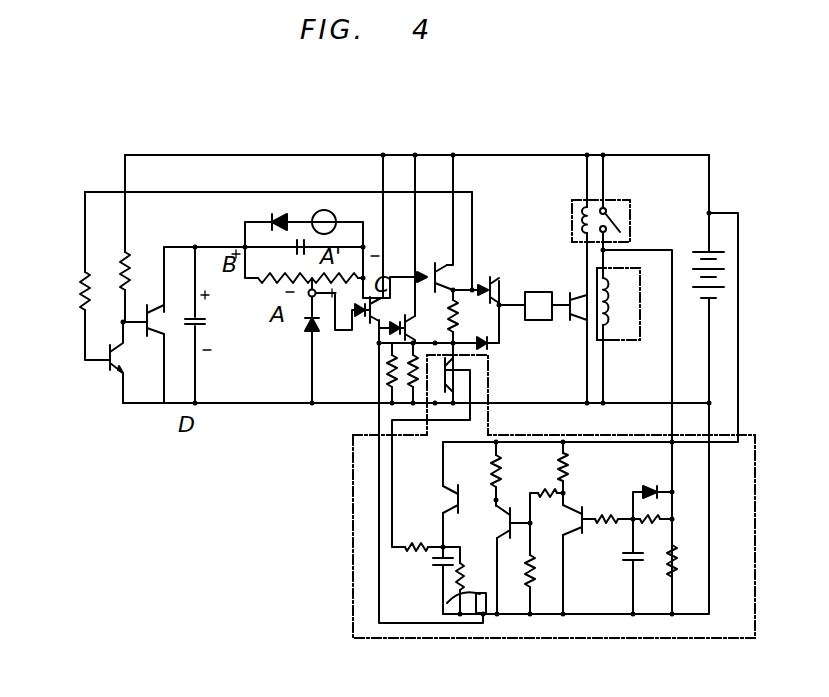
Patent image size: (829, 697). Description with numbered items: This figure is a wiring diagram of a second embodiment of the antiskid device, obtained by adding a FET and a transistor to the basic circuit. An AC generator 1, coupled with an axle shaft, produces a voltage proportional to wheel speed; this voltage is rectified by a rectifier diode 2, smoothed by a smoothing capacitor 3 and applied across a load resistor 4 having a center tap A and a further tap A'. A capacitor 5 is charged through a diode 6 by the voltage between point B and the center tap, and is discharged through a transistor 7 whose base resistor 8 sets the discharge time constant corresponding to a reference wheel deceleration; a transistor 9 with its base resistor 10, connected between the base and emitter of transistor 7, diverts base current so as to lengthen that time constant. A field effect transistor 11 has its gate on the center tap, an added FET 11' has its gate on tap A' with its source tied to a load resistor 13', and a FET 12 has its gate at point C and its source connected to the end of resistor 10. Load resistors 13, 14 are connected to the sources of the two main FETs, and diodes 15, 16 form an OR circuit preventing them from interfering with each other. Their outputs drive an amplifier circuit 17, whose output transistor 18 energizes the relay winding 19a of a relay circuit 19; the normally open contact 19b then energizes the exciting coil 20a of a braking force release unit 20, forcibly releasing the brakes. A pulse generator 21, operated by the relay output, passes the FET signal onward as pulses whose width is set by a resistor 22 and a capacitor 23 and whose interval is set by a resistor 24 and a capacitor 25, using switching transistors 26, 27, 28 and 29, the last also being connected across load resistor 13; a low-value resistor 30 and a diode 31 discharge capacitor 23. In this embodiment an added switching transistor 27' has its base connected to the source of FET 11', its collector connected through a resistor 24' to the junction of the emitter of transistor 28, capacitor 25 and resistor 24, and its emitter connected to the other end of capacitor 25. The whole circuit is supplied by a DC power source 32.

The AC generator 1 is at (335, 214).
The rectifier diode 2 is at (272, 214).
The smoothing capacitor 3 is at (288, 266).
The load resistor 4 is at (266, 284).
The capacitor 5 is at (186, 326).
The diode 6 is at (305, 328).
The transistor 7 is at (148, 340).
The base resistor 8 is at (110, 265).
The transistor 9 is at (110, 375).
The base resistor 10 is at (78, 288).
The field effect transistor 11 is at (413, 314).
The FET 11' is at (357, 327).
The FET 12 is at (430, 258).
The load resistor 13 is at (367, 368).
The load resistor 13' is at (375, 376).
The load resistor 14 is at (460, 310).
The diode 15 is at (490, 282).
The diode 16 is at (488, 346).
The amplifier circuit 17 is at (538, 290).
The transistor 18 is at (575, 322).
The relay circuit 19 is at (580, 198).
The relay winding 19a is at (578, 222).
The normally open contact 19b is at (620, 215).
The braking force release unit 20 is at (640, 332).
The exciting coil 20a is at (615, 318).
The pulse generator 21 is at (352, 520).
The resistor 22 is at (650, 523).
The capacitor 23 is at (622, 558).
The resistor 24 is at (407, 530).
The resistor 24' is at (472, 550).
The capacitor 25 is at (432, 562).
The switching transistor 26 is at (578, 532).
The switching transistor 27 is at (512, 480).
The switching transistor 27' is at (436, 606).
The switching transistor 28 is at (450, 492).
The switching transistor 29 is at (450, 378).
The resistor 30 is at (680, 552).
The diode 31 is at (650, 484).
The DC power source 32 is at (692, 258).